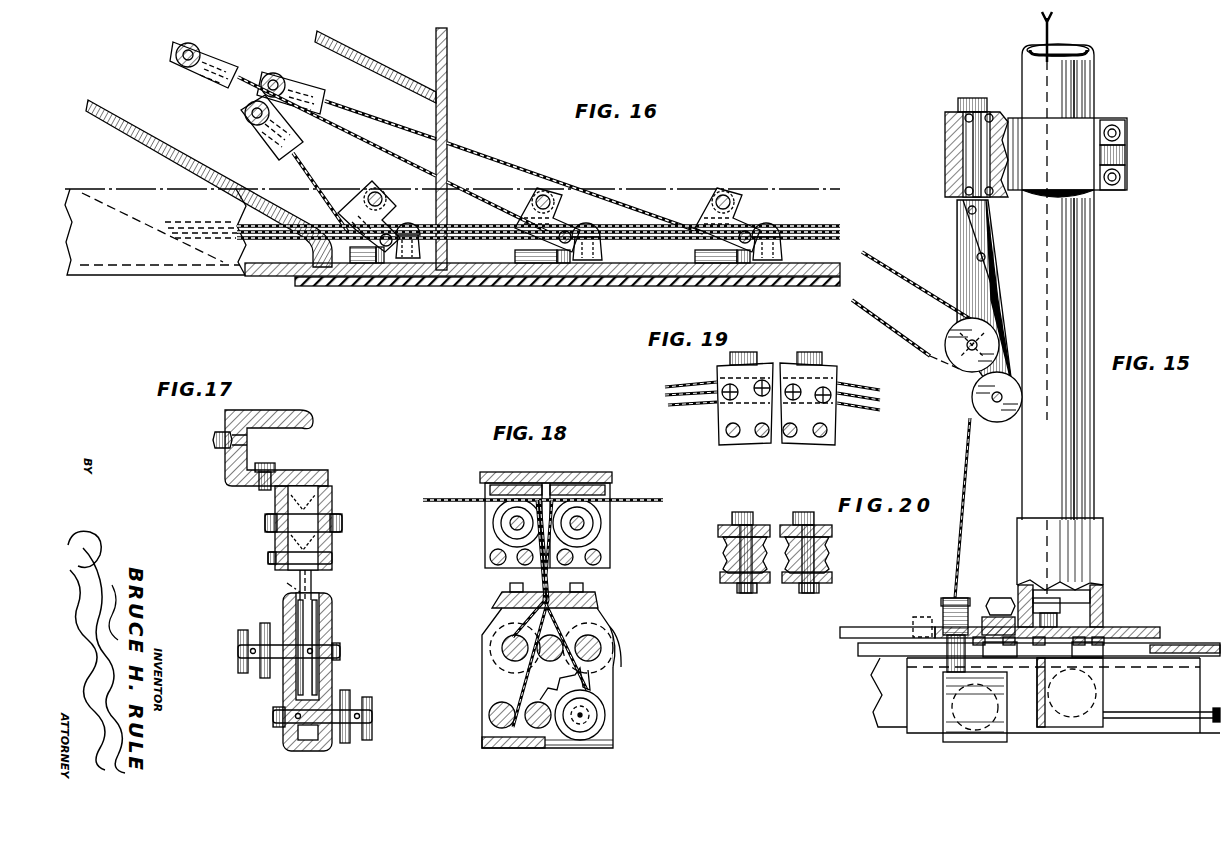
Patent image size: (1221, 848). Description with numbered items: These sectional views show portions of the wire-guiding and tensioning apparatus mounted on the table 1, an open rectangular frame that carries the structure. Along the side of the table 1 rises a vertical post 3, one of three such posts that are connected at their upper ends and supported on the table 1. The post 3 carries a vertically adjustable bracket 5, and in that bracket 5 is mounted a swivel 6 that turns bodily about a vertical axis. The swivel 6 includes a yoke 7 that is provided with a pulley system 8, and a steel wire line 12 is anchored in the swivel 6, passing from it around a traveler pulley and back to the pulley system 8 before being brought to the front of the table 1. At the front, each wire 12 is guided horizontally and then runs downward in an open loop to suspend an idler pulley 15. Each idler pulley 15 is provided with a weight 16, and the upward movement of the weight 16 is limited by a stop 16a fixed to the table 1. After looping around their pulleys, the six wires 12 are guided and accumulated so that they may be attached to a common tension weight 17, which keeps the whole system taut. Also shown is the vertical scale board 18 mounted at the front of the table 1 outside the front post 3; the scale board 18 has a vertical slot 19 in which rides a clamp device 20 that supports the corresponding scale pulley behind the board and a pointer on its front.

In FIG. 16, the table 1 is at (100, 248).
In FIG. 15, the table 1 is at (884, 668).
In FIG. 17, the table 1 is at (273, 409).
In FIG. 15, the vertical post 3 is at (1030, 73).
In FIG. 15, the bracket 5 is at (1085, 160).
In FIG. 15, the swivel 6 is at (947, 129).
In FIG. 15, the yoke 7 is at (960, 236).
In FIG. 15, the pulley system 8 is at (975, 400).
In FIG. 16, the steel wire line 12 is at (273, 240).
In FIG. 15, the steel wire line 12 is at (1043, 33).
In FIG. 17, the steel wire line 12 is at (314, 586).
In FIG. 18, the steel wire line 12 is at (437, 505).
In FIG. 19, the steel wire line 12 is at (693, 408).
In FIG. 20, the steel wire line 12 is at (773, 550).
In FIG. 16, the idler pulley 15 is at (432, 267).
In FIG. 16, the weight 16 is at (416, 224).
In FIG. 16, the stop 16a is at (411, 262).
In FIG. 17, the common tension weight 17 is at (326, 681).
In FIG. 18, the common tension weight 17 is at (603, 687).
In FIG. 16, the scale board 18 is at (326, 281).
In FIG. 17, the scale board 18 is at (301, 447).
In FIG. 17, the vertical slot 19 is at (335, 480).
In FIG. 17, the clamp device 20 is at (342, 517).